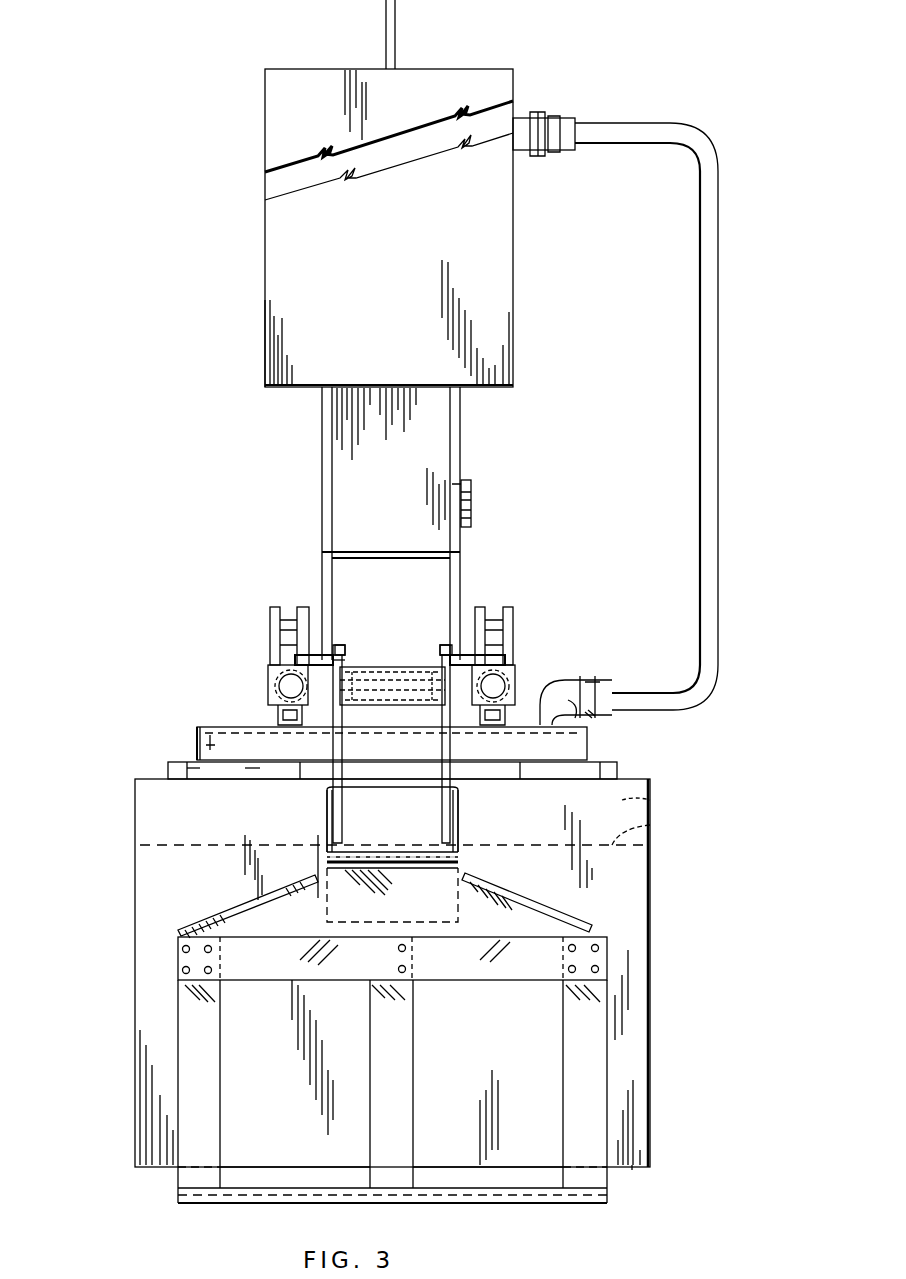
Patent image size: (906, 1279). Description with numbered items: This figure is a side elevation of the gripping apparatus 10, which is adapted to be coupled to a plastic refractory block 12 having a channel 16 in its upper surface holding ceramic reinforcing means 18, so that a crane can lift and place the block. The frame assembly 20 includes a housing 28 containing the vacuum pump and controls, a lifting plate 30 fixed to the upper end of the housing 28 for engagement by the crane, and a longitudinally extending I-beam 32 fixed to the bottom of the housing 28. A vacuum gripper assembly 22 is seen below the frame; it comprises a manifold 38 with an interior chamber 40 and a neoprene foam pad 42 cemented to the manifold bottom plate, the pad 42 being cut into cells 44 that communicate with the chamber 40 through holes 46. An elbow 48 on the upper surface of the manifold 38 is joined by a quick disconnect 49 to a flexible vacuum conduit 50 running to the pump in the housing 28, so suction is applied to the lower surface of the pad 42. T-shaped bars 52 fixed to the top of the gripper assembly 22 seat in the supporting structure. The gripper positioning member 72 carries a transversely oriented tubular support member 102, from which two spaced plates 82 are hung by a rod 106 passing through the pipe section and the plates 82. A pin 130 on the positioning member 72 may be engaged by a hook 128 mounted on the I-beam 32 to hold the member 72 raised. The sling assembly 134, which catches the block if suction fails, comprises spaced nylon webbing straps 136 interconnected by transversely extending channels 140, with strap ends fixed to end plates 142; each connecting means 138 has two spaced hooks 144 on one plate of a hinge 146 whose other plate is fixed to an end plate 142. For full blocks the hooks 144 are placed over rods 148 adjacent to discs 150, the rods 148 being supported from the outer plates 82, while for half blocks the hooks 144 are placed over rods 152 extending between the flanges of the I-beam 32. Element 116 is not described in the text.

The gripping apparatus 10 is at (185, 212).
The full plastic refractory block 12 is at (650, 926).
The channel 16 is at (650, 826).
The reinforcing means 18 is at (650, 800).
The frame assembly 20 is at (264, 333).
The outer vacuum gripper assembly 22 is at (199, 730).
The housing 28 is at (266, 377).
The lifting plate 30 is at (396, 36).
The I-beam 32 is at (460, 430).
The manifold 38 is at (210, 728).
The interior chamber 40 is at (197, 748).
The neoprene foam pad 42 is at (168, 770).
The cell 44 is at (195, 780).
The hole 46 is at (250, 780).
The elbow 48 is at (555, 685).
The quick disconnect 49 is at (588, 712).
The flexible vacuum conduit 50 is at (712, 655).
The T-shaped bar 52 is at (290, 725).
The gripper positioning member 72 is at (370, 663).
The plate 82 is at (268, 675).
The tubular support member 102 is at (374, 665).
The rod 106 is at (280, 690).
The upright post 116 is at (298, 608).
The hook 128 is at (472, 498).
The pin 130 is at (448, 655).
The sling assembly 134 is at (612, 1036).
The nylon webbing strap 136 is at (222, 1065).
The connecting means 138 is at (458, 824).
The transversely extending channel 140 is at (500, 1203).
The end plate 142 is at (228, 906).
The hook 144 is at (345, 815).
The hinge 146 is at (325, 828).
The rod 148 is at (290, 660).
The disc 150 is at (338, 665).
The rod 152 is at (352, 552).